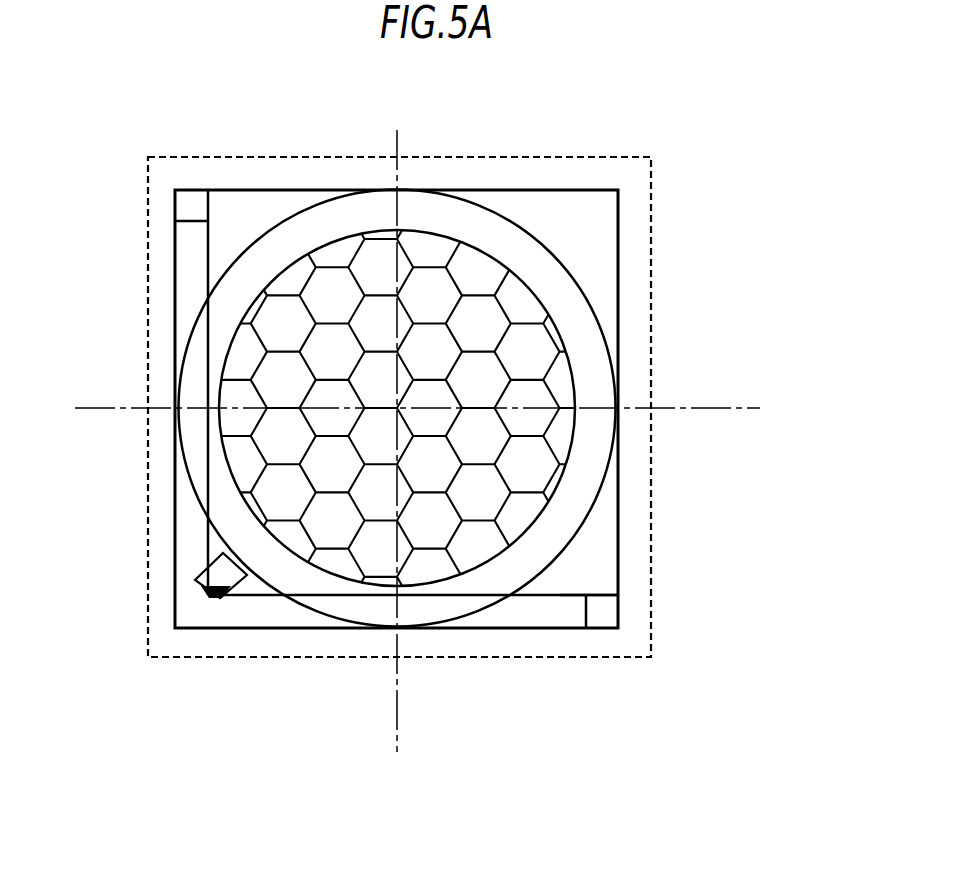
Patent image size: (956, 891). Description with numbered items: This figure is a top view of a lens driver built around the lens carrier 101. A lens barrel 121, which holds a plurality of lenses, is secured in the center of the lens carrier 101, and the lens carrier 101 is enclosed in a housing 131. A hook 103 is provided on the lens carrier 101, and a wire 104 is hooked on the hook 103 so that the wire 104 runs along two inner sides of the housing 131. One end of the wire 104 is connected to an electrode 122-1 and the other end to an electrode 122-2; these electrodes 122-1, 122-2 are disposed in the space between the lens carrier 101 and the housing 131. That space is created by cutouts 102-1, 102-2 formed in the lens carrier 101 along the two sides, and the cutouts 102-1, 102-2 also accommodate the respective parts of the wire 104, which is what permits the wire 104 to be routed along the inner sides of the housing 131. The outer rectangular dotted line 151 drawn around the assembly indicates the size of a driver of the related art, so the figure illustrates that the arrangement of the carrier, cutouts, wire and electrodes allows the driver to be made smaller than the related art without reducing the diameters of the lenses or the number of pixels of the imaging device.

The outer rectangular dotted line 151 is at (654, 201).
The housing 131 is at (618, 482).
The lens carrier 101 is at (590, 352).
The lens barrel 121 is at (470, 267).
The cutout 102-2 is at (190, 438).
The cutout 102-1 is at (444, 603).
The electrode 122-2 is at (190, 205).
The electrode 122-1 is at (595, 612).
The hook 103 is at (225, 577).
The wire 104 is at (582, 595).